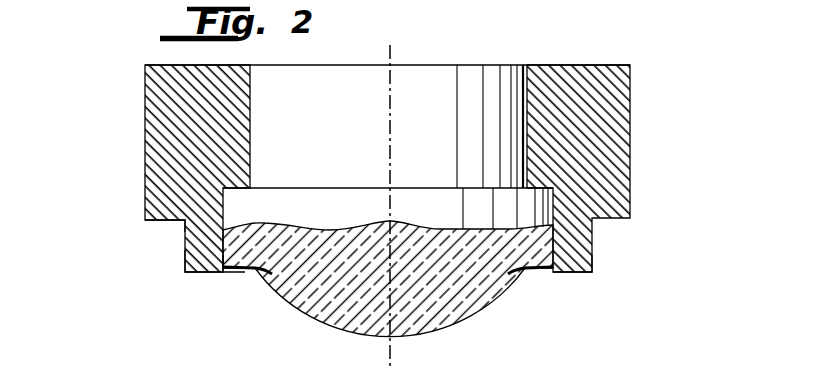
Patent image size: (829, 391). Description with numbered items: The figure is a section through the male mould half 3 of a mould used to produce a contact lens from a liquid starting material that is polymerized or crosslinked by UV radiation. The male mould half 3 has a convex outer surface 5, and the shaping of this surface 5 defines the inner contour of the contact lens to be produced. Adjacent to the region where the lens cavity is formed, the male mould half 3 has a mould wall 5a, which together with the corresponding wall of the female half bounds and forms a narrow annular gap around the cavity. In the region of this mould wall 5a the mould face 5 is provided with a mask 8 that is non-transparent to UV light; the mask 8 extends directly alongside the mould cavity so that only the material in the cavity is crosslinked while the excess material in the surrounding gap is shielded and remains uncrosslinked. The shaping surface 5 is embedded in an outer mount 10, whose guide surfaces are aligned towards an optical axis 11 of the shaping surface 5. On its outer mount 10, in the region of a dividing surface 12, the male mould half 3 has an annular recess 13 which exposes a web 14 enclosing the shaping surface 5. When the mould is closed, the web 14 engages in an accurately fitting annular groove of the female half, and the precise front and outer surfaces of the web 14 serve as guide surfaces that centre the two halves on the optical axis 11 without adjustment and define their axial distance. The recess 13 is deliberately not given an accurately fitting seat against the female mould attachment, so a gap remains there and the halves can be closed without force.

The male mould half 3 is at (138, 120).
The convex outer surface 5 is at (447, 327).
The mould wall 5a is at (237, 275).
The mask 8 is at (247, 277).
The mount 10 is at (612, 127).
The optical axis 11 is at (390, 362).
The dividing surface 12 is at (574, 275).
The recess 13 is at (168, 243).
The web 14 is at (190, 284).